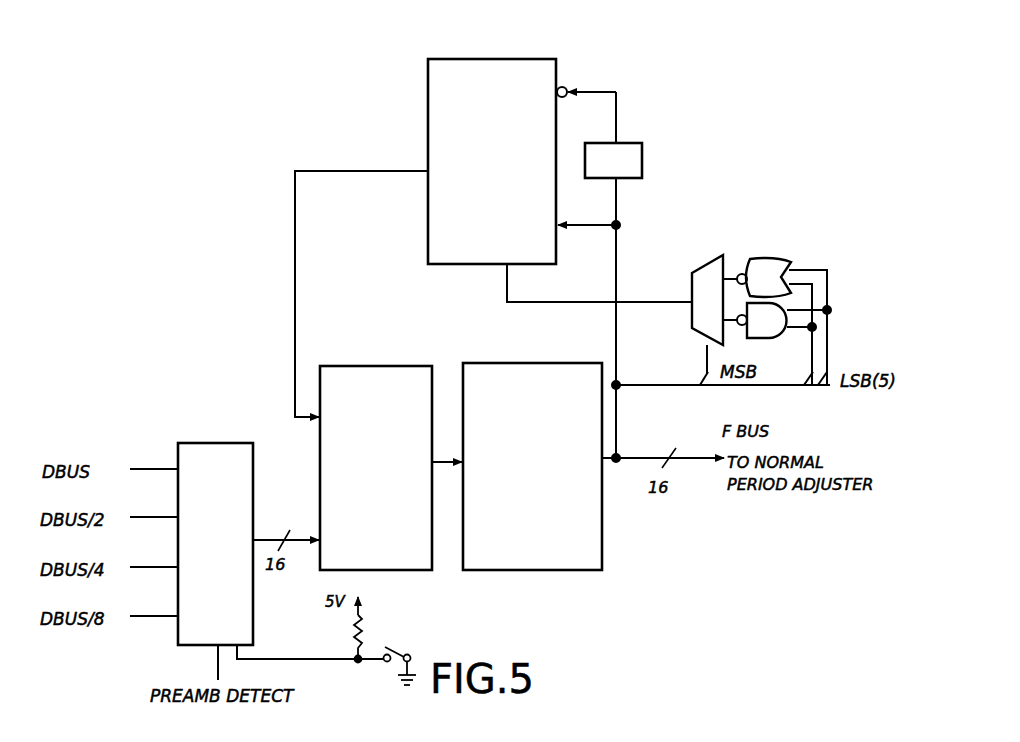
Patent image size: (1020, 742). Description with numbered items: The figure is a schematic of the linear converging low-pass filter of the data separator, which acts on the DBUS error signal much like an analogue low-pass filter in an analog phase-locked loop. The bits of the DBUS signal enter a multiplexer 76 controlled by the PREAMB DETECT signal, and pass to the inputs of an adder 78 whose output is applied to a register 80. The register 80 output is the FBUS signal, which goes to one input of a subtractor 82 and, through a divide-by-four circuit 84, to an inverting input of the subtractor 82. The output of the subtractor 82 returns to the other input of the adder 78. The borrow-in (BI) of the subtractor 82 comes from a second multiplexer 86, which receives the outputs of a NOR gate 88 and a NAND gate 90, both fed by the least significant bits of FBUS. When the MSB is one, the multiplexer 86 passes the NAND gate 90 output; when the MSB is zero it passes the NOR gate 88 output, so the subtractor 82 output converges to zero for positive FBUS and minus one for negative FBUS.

The multiplexer 76 is at (253, 621).
The adder 78 is at (380, 571).
The register 80 is at (540, 571).
The subtractor 82 is at (428, 242).
The divide-by-four circuit 84 is at (642, 148).
The multiplexer 86 is at (697, 270).
The NOR gate 88 is at (780, 262).
The NAND gate 90 is at (772, 340).